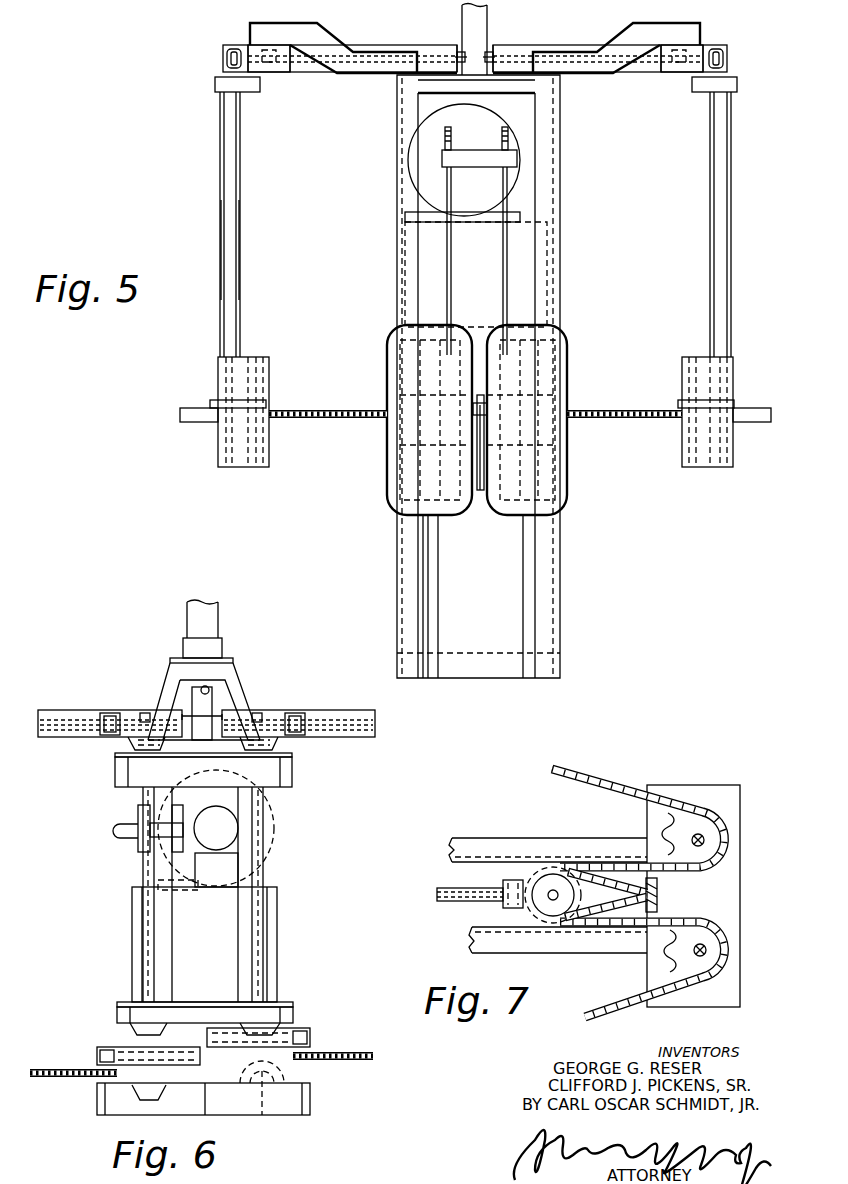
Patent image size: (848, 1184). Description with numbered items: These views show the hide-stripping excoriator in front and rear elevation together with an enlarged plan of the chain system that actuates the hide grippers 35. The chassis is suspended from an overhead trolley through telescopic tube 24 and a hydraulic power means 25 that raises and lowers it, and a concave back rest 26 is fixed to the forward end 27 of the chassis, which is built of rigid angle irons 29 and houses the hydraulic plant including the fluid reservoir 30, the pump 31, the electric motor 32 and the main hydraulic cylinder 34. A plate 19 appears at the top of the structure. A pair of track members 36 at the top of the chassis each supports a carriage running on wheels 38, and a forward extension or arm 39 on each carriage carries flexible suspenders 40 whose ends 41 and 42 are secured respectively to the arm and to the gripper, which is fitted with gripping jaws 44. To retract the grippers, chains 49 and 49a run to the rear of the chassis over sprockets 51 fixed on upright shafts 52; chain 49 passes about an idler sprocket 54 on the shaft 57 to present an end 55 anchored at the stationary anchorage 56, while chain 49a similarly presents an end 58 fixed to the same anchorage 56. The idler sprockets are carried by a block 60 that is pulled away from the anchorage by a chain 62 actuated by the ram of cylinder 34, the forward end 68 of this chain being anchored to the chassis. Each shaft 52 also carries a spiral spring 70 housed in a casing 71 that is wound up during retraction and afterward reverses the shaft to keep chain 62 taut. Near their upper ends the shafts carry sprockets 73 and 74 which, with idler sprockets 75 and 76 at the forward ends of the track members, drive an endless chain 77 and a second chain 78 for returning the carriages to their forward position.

In FIG. 5, the cover plate 19 is at (312, 30).
In FIG. 5, the telescopic tube 24 is at (488, 17).
In FIG. 6, the telescopic tube 24 is at (205, 698).
In FIG. 6, the power means 25 is at (205, 616).
In FIG. 5, the back rest 26 is at (451, 505).
In FIG. 5, the forward end 27 is at (500, 88).
In FIG. 5, the angle irons 29 is at (397, 150).
In FIG. 7, the angle irons 29 is at (470, 840).
In FIG. 5, the fluid reservoir 30 is at (530, 273).
In FIG. 6, the fluid reservoir 30 is at (278, 956).
In FIG. 6, the pump 31 is at (228, 836).
In FIG. 5, the electric motor 32 is at (425, 117).
In FIG. 6, the electric motor 32 is at (270, 826).
In FIG. 5, the main hydraulic cylinder 34 is at (485, 207).
In FIG. 5, the hide grippers 35 is at (208, 422).
In FIG. 5, the track members 36 is at (222, 48).
In FIG. 6, the track members 36 is at (82, 710).
In FIG. 5, the wheels 38 is at (226, 62).
In FIG. 5, the forward extension or arm 39 is at (255, 90).
In FIG. 5, the flexible suspenders 40 is at (232, 196).
In FIG. 5, the suspender end 41 is at (220, 98).
In FIG. 5, the suspender end 42 is at (220, 358).
In FIG. 5, the gripping jaws 44 is at (258, 468).
In FIG. 5, the chain 49 is at (318, 420).
In FIG. 6, the chain 49 is at (345, 1062).
In FIG. 7, the chain 49 is at (604, 783).
In FIG. 5, the chain 49a is at (640, 420).
In FIG. 6, the chain 49a is at (55, 1079).
In FIG. 7, the chain 49a is at (612, 1001).
In FIG. 6, the sprockets 51 is at (135, 1098).
In FIG. 7, the sprockets 51 is at (712, 829).
In FIG. 6, the upright shafts 52 is at (146, 966).
In FIG. 7, the upright shafts 52 is at (705, 840).
In FIG. 7, the sprocket 54 is at (574, 878).
In FIG. 7, the chain end 55 is at (604, 924).
In FIG. 7, the anchorage 56 is at (659, 895).
In FIG. 7, the shaft 57 is at (553, 904).
In FIG. 7, the chain end 58 is at (608, 874).
In FIG. 7, the block 60 is at (513, 880).
In FIG. 5, the chain 62 is at (480, 495).
In FIG. 7, the chain 62 is at (472, 903).
In FIG. 5, the forward end of chain 68 is at (486, 412).
In FIG. 6, the spiral spring 70 is at (97, 1055).
In FIG. 6, the casing 71 is at (108, 1047).
In FIG. 5, the sprocket 73 is at (458, 52).
In FIG. 6, the sprocket 73 is at (262, 714).
In FIG. 5, the sprocket 74 is at (496, 54).
In FIG. 6, the sprocket 74 is at (140, 714).
In FIG. 5, the idler sprocket 75 is at (278, 50).
In FIG. 5, the idler sprocket 76 is at (668, 50).
In FIG. 5, the endless chain 77 is at (380, 54).
In FIG. 6, the endless chain 77 is at (346, 737).
In FIG. 5, the second chain 78 is at (563, 54).
In FIG. 6, the second chain 78 is at (52, 737).